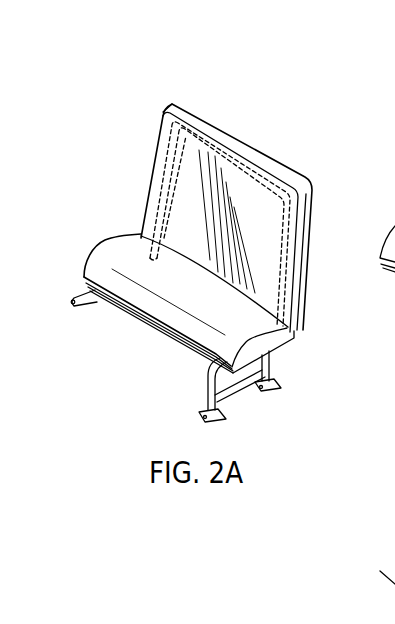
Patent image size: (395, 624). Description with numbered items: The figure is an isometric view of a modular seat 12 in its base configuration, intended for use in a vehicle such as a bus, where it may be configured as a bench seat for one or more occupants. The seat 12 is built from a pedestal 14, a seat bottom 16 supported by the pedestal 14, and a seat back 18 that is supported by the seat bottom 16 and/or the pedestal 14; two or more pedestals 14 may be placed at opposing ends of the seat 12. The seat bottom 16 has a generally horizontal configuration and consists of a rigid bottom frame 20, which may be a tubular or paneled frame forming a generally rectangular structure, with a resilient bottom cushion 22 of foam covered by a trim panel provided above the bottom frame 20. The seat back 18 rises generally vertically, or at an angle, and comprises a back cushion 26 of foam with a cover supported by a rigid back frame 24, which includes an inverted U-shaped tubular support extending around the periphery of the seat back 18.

The seat 12 is at (159, 66).
The pedestal 14 is at (247, 392).
The seat bottom 16 is at (105, 231).
The seat back 18 is at (326, 222).
The bottom frame 20 is at (150, 322).
The bottom cushion 22 is at (135, 237).
The back frame 24 is at (288, 292).
The back cushion 26 is at (152, 175).